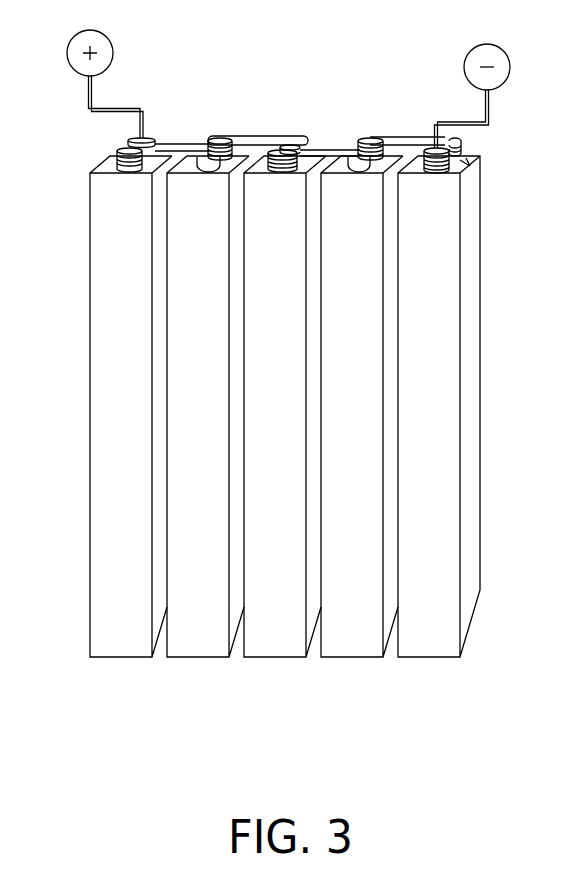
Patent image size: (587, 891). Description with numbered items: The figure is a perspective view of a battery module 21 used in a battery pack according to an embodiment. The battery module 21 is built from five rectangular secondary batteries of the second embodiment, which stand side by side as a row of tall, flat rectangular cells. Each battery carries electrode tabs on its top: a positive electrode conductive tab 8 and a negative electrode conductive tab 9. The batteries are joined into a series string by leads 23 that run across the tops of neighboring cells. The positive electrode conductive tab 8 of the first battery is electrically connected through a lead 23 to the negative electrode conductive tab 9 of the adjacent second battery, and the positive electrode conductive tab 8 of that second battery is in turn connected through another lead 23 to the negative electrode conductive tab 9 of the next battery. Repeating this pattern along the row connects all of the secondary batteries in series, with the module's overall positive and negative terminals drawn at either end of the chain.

The battery module 21 is at (334, 77).
The lead 23 is at (262, 135).
The positive electrode conductive tab 8 is at (360, 138).
The negative electrode conductive tab 9 is at (372, 152).